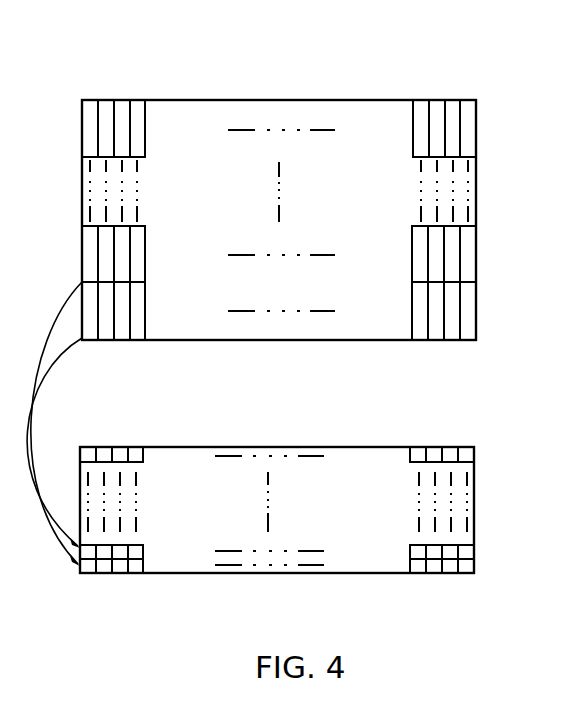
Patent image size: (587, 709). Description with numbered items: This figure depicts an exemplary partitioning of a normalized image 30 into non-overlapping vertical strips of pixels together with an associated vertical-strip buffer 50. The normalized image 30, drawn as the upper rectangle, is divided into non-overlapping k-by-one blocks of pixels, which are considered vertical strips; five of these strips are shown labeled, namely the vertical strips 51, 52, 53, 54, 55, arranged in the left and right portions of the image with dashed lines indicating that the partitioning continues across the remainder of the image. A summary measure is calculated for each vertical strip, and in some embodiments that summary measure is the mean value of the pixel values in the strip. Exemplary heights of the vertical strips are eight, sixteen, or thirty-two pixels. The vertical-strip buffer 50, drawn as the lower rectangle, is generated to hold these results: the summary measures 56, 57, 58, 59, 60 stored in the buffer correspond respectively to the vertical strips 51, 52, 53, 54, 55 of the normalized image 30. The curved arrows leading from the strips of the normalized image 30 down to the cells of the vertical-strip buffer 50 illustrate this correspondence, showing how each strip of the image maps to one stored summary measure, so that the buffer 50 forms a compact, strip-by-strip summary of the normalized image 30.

The normalized image 30 is at (484, 94).
The vertical-strip buffer 50 is at (482, 443).
The vertical strip 51 is at (87, 140).
The vertical strip 52 is at (87, 264).
The vertical strip 53 is at (88, 341).
The vertical strip 54 is at (142, 345).
The vertical strip 55 is at (417, 341).
The summary measure 56 is at (85, 455).
The summary measure 57 is at (92, 556).
The summary measure 58 is at (90, 572).
The summary measure 59 is at (140, 566).
The summary measure 60 is at (420, 572).